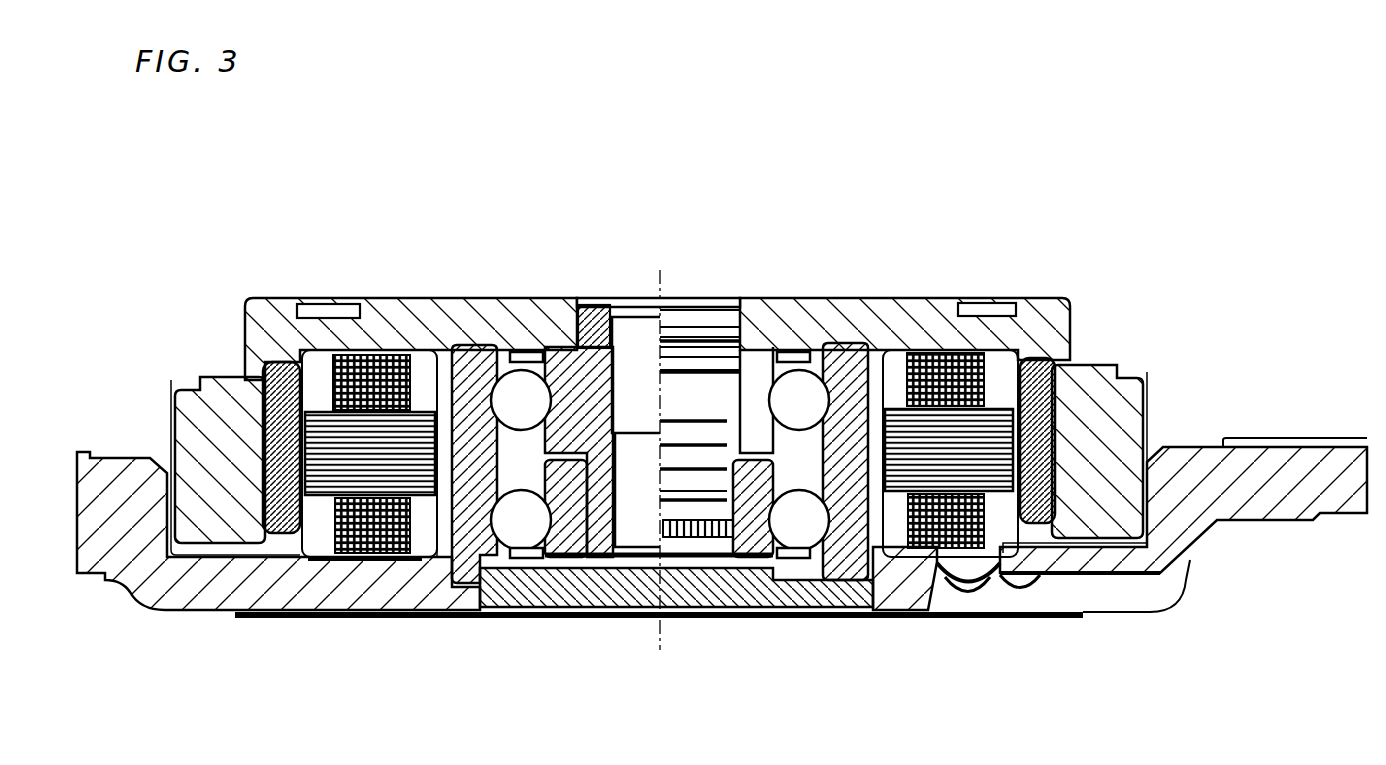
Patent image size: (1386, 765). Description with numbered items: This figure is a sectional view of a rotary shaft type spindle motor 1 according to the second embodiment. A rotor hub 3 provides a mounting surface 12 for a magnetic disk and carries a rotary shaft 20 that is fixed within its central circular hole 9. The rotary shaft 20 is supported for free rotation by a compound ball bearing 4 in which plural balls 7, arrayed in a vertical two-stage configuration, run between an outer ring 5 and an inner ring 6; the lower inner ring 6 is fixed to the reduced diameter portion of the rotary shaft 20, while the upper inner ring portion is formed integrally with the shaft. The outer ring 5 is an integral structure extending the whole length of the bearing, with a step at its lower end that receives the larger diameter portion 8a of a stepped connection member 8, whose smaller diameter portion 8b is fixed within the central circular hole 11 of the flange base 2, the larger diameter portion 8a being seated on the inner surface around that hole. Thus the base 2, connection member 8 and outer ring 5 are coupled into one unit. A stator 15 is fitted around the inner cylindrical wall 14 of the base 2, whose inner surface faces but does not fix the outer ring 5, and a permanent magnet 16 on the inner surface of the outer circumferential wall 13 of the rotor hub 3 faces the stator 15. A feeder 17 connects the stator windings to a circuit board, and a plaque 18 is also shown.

The rotary shaft type spindle motor 1 is at (843, 180).
The base 2 is at (170, 616).
The rotor hub 3 is at (258, 283).
The compound ball bearing 4 is at (528, 350).
The outer ring 5 is at (473, 347).
The inner ring 6 is at (597, 612).
The balls 7 is at (512, 530).
The connection member 8 is at (687, 628).
The larger diameter portion 8a is at (810, 600).
The smaller diameter portion 8b is at (733, 600).
The central circular hole 9 is at (596, 305).
The central circular hole 11 is at (567, 545).
The mounting surface 12 is at (1093, 363).
The outer circumferential wall 13 is at (193, 425).
The inner cylindrical wall 14 is at (438, 523).
The stator 15 is at (362, 474).
The permanent magnet 16 is at (272, 520).
The feeder 17 is at (965, 590).
The plaque 18 is at (882, 618).
The rotary shaft 20 is at (703, 325).